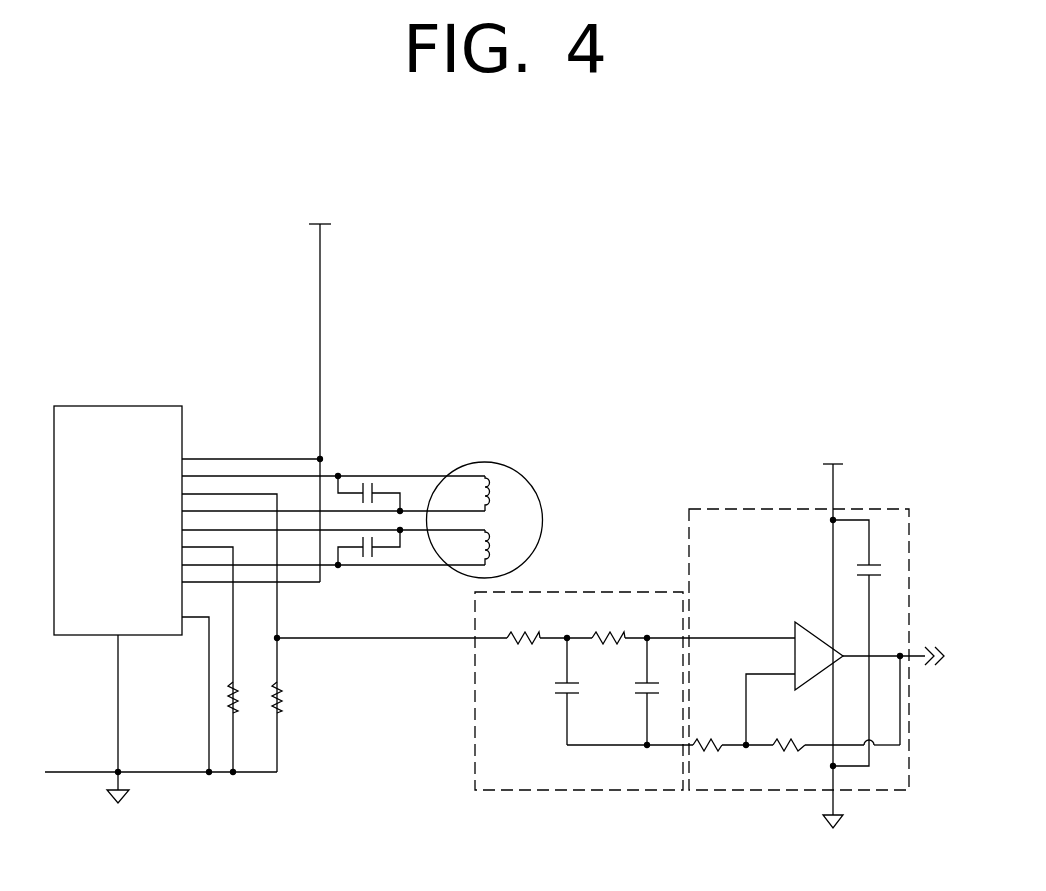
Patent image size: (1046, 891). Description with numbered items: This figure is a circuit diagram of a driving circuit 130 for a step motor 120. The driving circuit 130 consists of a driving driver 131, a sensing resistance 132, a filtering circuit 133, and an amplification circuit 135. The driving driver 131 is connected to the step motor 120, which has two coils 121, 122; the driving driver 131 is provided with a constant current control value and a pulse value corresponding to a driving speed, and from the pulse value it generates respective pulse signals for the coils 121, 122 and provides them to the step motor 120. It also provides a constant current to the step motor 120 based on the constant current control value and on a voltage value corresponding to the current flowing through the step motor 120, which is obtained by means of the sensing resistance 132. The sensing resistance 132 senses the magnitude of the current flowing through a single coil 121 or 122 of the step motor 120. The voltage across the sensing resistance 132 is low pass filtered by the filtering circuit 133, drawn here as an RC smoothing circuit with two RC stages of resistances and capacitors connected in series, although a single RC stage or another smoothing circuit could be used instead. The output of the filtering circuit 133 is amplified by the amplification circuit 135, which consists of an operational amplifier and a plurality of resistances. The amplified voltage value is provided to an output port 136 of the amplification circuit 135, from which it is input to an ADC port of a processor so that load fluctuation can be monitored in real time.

The driving circuit 130 is at (531, 182).
The driving driver 131 is at (92, 405).
The sensing resistance 132 is at (278, 752).
The filtering circuit 133 is at (628, 791).
The amplification circuit 135 is at (780, 791).
The output port 136 is at (933, 648).
The step motor 120 is at (520, 470).
The coil 121 is at (491, 487).
The coil 122 is at (491, 540).